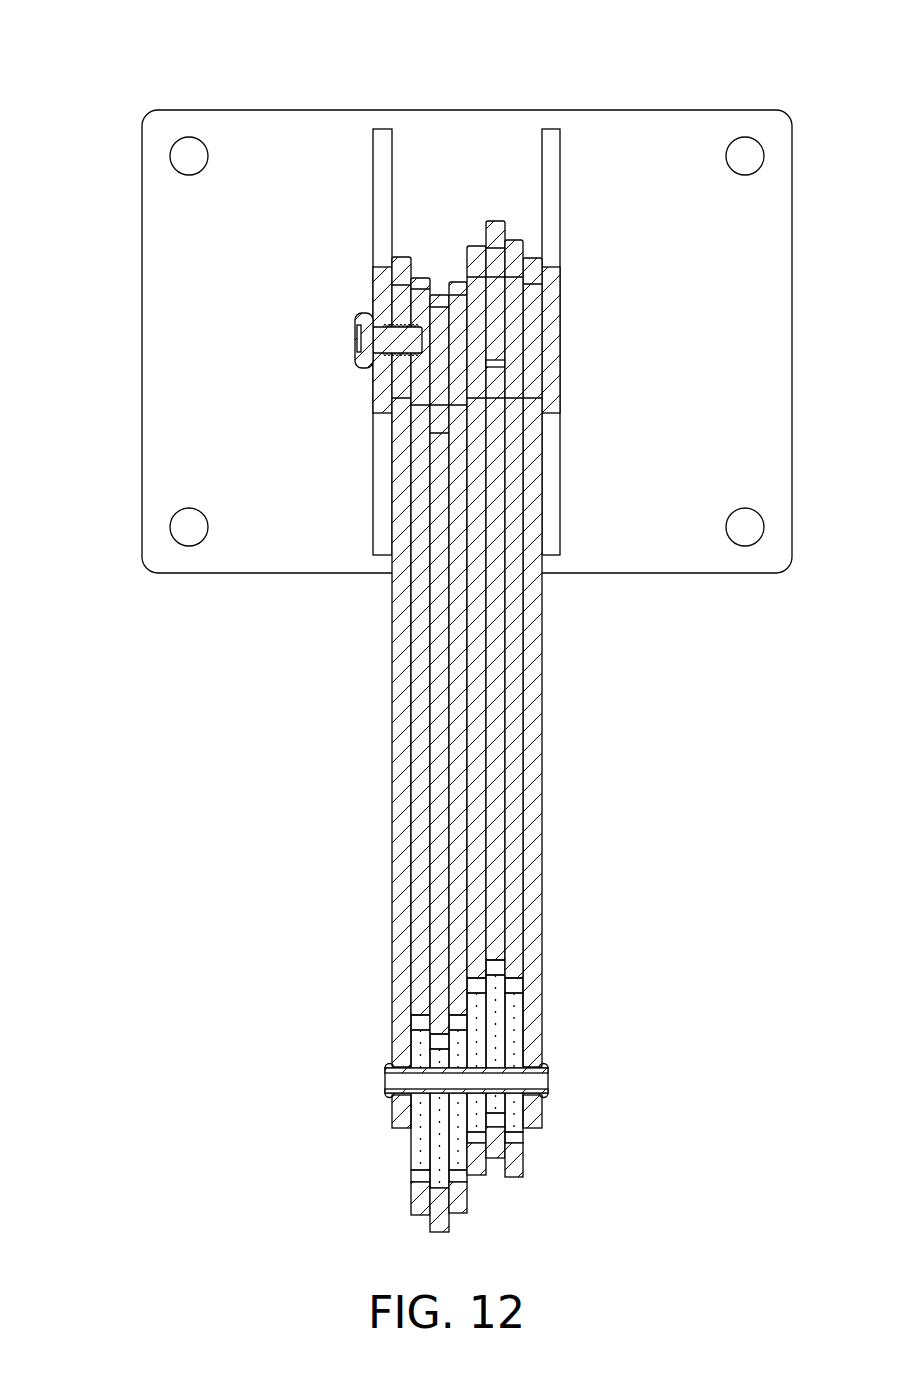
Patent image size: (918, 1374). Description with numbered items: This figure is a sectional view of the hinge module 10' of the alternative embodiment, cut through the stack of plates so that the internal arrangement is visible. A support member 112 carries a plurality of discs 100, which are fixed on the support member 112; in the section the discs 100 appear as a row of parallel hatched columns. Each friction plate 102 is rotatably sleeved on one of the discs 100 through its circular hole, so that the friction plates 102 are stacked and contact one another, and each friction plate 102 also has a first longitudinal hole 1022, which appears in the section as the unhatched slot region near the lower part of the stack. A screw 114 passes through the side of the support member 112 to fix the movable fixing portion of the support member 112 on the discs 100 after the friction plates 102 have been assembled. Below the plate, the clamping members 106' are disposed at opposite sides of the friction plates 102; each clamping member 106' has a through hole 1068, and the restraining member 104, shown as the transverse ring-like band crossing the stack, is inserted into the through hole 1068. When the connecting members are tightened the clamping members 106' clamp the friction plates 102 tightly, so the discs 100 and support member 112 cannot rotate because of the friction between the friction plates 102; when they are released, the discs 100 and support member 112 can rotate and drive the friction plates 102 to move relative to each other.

The hinge module 10' is at (447, 616).
The friction plate 102 is at (556, 603).
The support member 112 is at (712, 110).
The screw 114 is at (355, 342).
The disc 100 is at (562, 640).
The clamping member 106' is at (405, 718).
The first longitudinal hole 1022 is at (515, 1023).
The restraining member 104 is at (388, 1068).
The through hole 1068 is at (399, 1120).